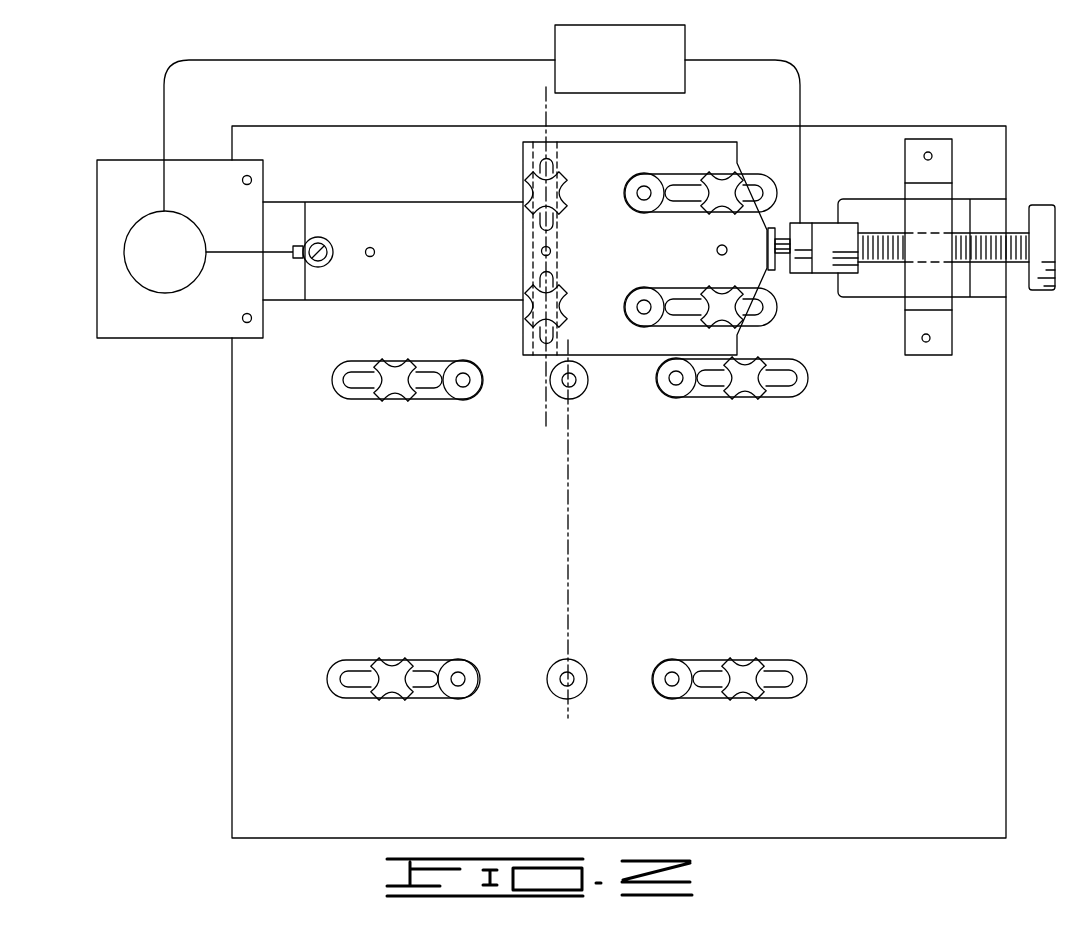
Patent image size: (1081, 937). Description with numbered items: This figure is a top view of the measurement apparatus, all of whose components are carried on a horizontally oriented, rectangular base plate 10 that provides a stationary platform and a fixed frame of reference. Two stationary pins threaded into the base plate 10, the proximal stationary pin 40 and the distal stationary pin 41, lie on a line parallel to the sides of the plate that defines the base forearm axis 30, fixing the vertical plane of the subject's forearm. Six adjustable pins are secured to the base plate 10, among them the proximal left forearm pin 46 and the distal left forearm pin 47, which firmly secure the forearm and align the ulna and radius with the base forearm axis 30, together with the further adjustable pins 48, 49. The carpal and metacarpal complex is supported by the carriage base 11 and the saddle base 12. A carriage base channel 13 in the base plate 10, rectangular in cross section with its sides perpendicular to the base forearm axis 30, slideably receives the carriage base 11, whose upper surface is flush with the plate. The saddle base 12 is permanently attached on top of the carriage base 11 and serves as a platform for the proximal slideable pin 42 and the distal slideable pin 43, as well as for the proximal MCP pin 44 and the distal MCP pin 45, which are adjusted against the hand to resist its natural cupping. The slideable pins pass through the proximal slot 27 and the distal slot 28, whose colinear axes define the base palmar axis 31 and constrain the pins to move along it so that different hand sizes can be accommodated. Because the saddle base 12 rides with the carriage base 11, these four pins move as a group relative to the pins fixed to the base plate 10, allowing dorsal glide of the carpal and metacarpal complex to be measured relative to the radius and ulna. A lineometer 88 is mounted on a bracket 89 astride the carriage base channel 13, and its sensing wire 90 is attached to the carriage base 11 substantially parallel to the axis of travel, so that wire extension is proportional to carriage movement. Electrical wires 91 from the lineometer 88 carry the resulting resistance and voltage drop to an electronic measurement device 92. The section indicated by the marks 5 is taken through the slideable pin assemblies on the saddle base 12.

The base plate 10 is at (982, 428).
The carriage base 11 is at (367, 212).
The saddle base 12 is at (697, 153).
The carriage base channel 13 is at (980, 210).
The proximal slot 27 is at (543, 337).
The distal slot 28 is at (542, 220).
The base forearm axis 30 is at (574, 462).
The base palmar axis 31 is at (550, 416).
The proximal stationary pin 40 is at (557, 658).
The distal stationary pin 41 is at (579, 402).
The proximal slideable pin 42 is at (526, 308).
The distal slideable pin 43 is at (526, 193).
The proximal MCP pin 44 is at (629, 329).
The distal MCP pin 45 is at (641, 172).
The proximal left forearm pin 46 is at (667, 658).
The distal left forearm pin 47 is at (678, 400).
The adjustable pin 48 is at (458, 658).
The adjustable pin 49 is at (463, 402).
The lineometer 88 is at (135, 243).
The bracket 89 is at (140, 167).
The sensing wire 90 is at (240, 247).
The electrical wires 91 is at (293, 58).
The electronic measurement device 92 is at (667, 43).
The section line 5- 5 is at (590, 272).